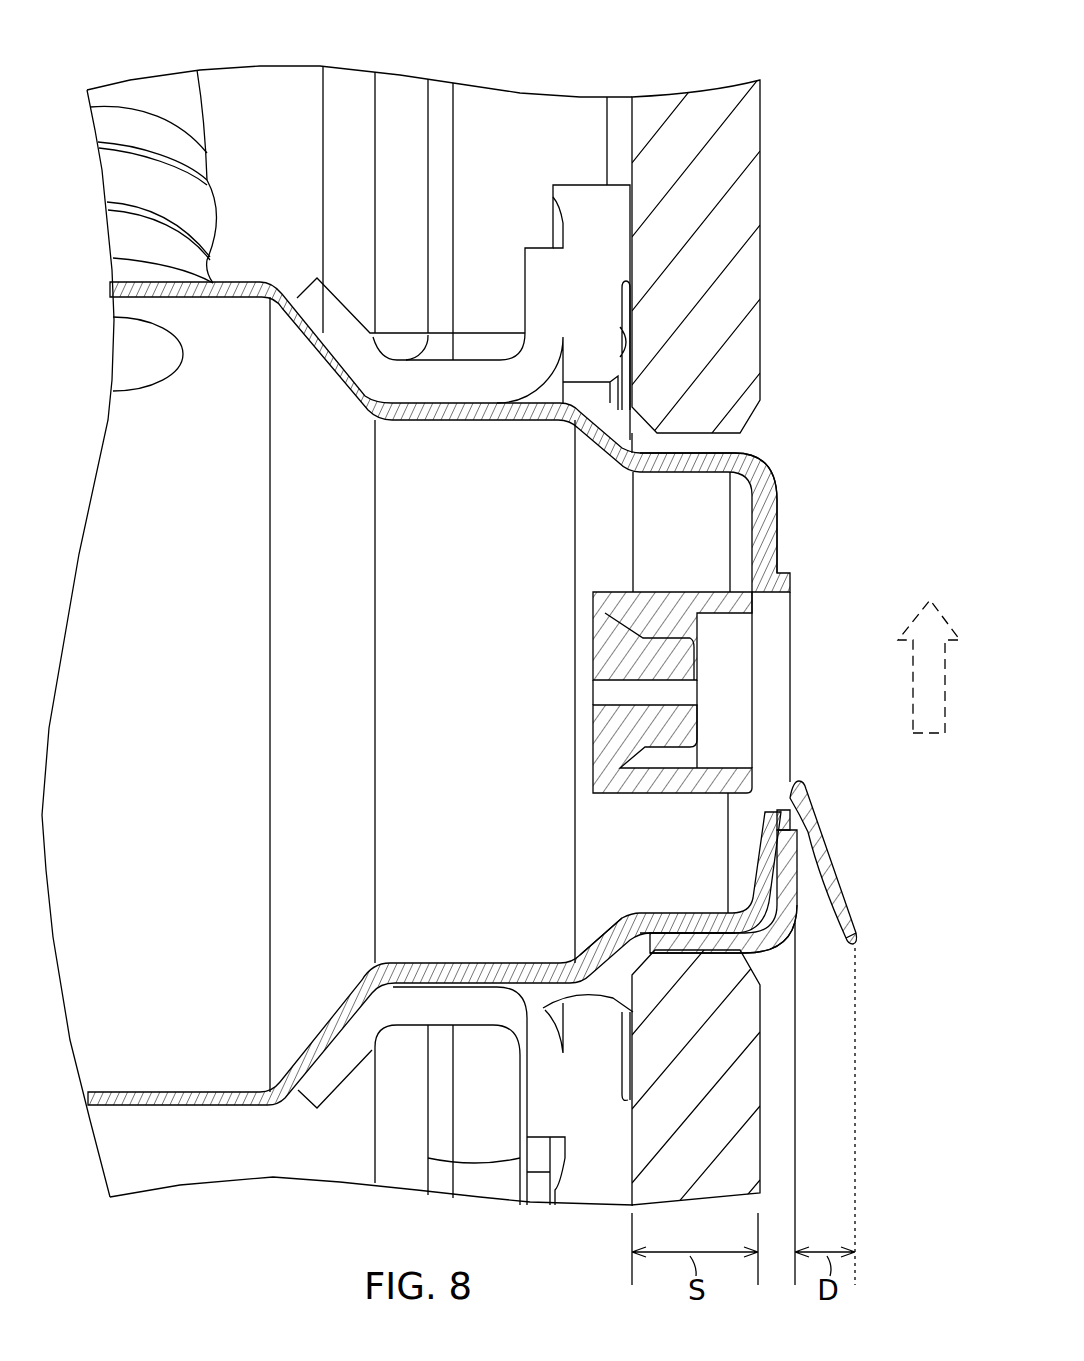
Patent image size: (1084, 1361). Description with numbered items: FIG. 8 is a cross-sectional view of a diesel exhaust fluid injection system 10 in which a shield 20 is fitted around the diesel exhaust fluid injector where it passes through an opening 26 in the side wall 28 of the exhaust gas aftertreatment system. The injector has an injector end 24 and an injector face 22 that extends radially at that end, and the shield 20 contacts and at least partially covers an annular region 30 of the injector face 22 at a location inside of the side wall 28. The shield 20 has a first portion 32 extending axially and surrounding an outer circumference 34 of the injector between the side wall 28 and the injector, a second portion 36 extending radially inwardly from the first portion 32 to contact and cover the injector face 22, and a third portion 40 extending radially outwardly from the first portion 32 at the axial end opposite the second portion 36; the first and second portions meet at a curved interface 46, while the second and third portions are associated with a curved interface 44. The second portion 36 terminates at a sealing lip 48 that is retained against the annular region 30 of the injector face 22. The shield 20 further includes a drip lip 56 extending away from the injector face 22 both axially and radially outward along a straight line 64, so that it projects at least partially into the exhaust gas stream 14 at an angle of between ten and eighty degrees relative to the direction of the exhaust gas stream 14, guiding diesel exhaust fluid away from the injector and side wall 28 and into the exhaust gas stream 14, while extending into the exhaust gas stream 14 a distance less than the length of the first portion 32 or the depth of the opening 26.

The system 10 is at (858, 126).
The exhaust gas stream 14 is at (912, 690).
The shield 20 is at (434, 958).
The injector face 22 is at (496, 437).
The injector end 24 is at (772, 486).
The opening 26 is at (682, 462).
The side wall 28 is at (737, 270).
The annular region 30 is at (777, 545).
The first portion 32 is at (683, 943).
The outer circumference 34 is at (705, 450).
The second portion 36 is at (769, 867).
The third portion 40 is at (598, 967).
The interface 44 is at (630, 937).
The interface 46 is at (730, 903).
The sealing lip 48 is at (767, 833).
The drip lip 56 is at (858, 862).
The straight line 64 is at (846, 890).